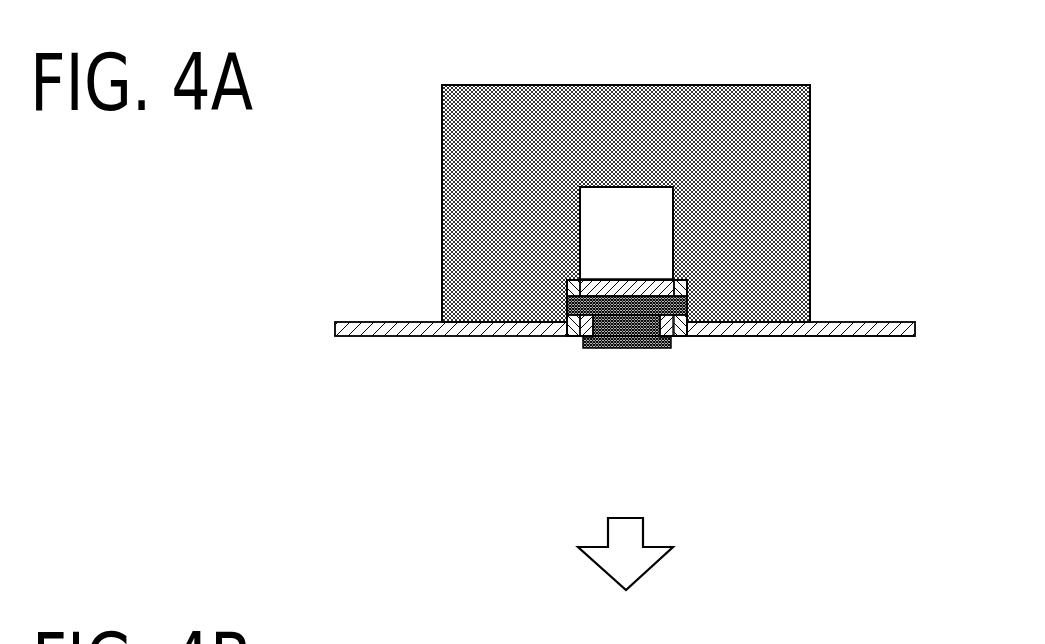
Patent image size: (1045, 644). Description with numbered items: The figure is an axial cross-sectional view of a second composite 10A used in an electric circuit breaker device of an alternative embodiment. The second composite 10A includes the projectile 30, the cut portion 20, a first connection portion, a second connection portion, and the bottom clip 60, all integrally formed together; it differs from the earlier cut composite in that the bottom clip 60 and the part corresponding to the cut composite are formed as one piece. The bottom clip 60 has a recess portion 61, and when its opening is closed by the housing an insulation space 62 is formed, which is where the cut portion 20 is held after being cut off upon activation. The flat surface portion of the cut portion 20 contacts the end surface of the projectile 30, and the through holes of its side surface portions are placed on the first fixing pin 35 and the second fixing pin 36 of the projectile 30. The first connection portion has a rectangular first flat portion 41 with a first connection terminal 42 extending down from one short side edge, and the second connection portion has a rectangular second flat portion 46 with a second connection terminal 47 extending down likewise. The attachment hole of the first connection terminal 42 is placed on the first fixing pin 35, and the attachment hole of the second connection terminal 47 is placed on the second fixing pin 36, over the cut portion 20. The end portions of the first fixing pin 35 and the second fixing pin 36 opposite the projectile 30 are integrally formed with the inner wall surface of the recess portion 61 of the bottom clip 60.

The second composite 10A is at (531, 67).
The bottom clip 60 is at (440, 128).
The insulation space 62 is at (642, 222).
The recess portion 61 is at (626, 233).
The cut portion 20 is at (647, 278).
The first connection terminal 42 is at (567, 285).
The second connection terminal 47 is at (640, 291).
The second fixing pin 36 is at (640, 307).
The first fixing pin 35 is at (575, 318).
The projectile 30 is at (623, 328).
The first flat portion 41 is at (432, 337).
The second flat portion 46 is at (798, 338).